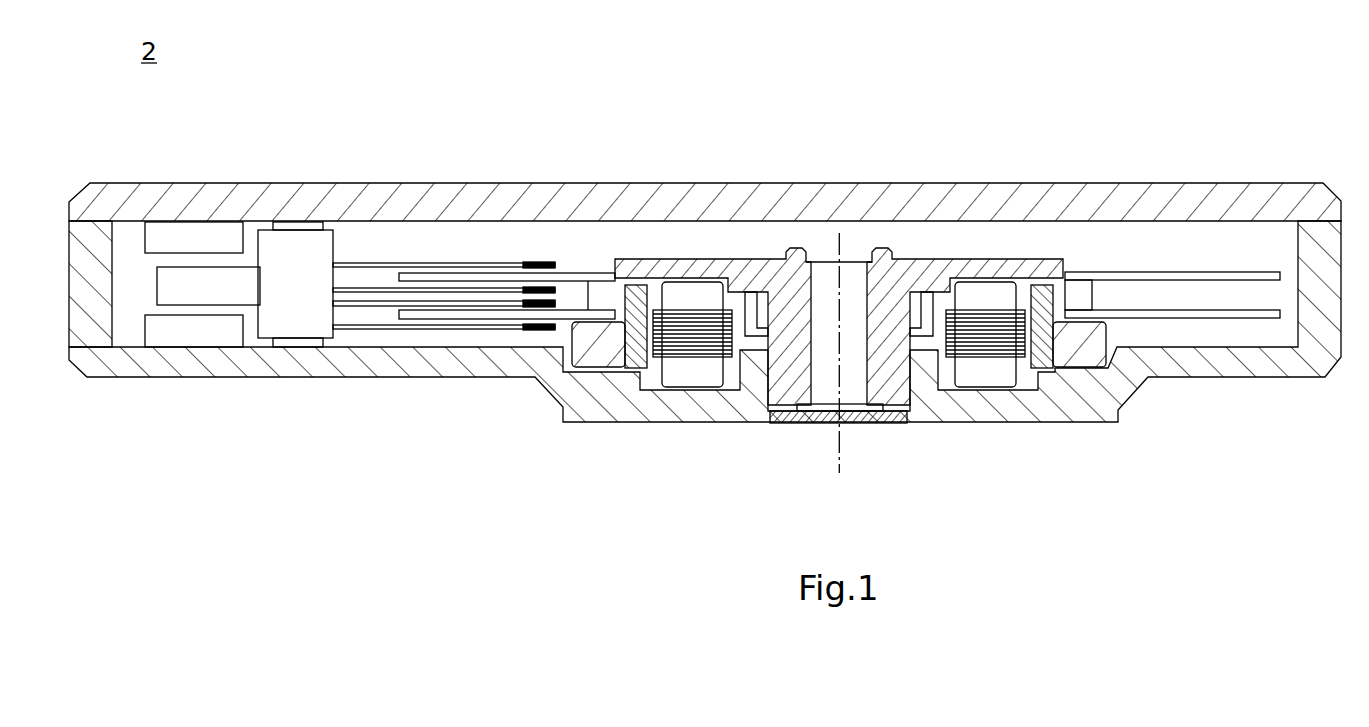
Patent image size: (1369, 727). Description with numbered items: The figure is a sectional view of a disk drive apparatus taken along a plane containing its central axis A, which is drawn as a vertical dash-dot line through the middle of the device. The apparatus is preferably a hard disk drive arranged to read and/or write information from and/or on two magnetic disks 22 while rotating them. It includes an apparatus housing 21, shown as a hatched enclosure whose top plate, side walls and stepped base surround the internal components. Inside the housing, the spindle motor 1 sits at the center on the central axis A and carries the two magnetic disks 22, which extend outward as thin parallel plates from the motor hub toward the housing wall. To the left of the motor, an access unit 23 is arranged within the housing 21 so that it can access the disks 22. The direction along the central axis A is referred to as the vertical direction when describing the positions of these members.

The spindle motor 1 is at (755, 246).
The apparatus housing 21 is at (1231, 170).
The magnetic disks 22 is at (1192, 280).
The access unit 23 is at (435, 334).
The central axis A is at (839, 367).